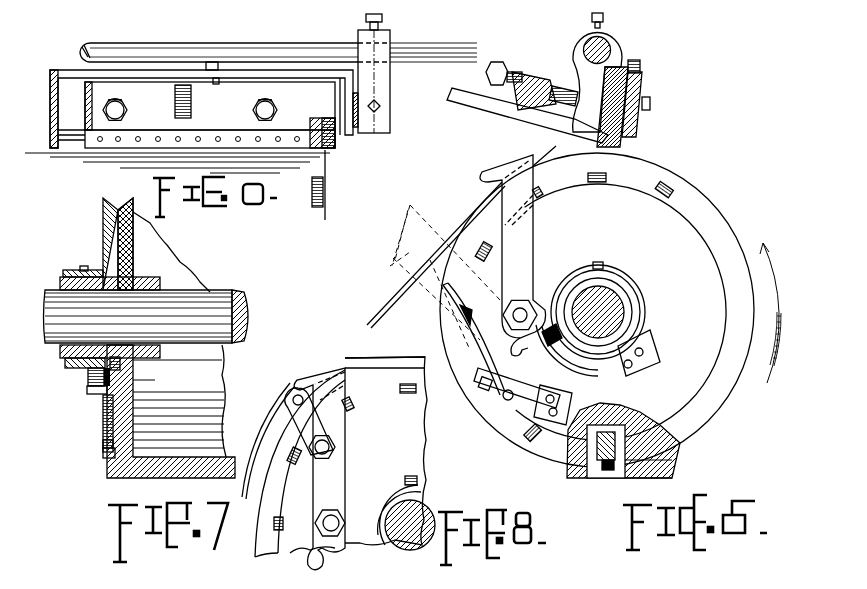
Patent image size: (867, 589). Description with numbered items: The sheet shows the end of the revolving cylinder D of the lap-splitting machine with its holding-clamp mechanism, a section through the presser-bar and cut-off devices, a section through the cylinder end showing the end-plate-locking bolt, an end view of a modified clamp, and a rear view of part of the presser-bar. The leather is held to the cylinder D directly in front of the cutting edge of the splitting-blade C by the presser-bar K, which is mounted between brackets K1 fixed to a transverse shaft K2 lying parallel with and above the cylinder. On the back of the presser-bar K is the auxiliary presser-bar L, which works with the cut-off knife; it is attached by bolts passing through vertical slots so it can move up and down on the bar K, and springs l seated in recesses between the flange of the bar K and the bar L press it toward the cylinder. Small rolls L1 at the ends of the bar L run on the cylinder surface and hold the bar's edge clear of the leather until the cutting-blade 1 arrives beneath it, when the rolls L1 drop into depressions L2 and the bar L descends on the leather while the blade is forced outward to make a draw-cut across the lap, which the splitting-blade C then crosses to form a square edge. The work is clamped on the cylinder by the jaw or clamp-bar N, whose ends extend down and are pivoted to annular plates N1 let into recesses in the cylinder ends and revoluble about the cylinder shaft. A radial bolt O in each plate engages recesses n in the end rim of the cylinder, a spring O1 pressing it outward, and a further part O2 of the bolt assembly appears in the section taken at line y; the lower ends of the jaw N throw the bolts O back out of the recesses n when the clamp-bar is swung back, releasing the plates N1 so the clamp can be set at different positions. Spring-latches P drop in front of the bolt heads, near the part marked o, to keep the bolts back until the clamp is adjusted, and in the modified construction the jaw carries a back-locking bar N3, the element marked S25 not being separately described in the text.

In FIG. 9, the presser-bar K is at (50, 110).
In FIG. 5, the presser-bar K is at (630, 62).
In FIG. 9, the brackets K1 is at (375, 88).
In FIG. 9, the transverse shaft K2 is at (278, 49).
In FIG. 9, the auxiliary presser-bar L is at (210, 115).
In FIG. 5, the auxiliary presser-bar L is at (638, 128).
In FIG. 9, the small rolls L1 is at (325, 150).
In FIG. 9, the depressions L2 is at (326, 198).
In FIG. 5, the depressions L2 is at (650, 475).
In FIG. 9, the springs l is at (188, 101).
In FIG. 9, the cylinder D is at (177, 168).
In FIG. 7, the cylinder D is at (146, 338).
In FIG. 8, the cylinder D is at (300, 463).
In FIG. 5, the cylinder D is at (597, 310).
In FIG. 7, the radial bolt O is at (95, 392).
In FIG. 5, the radial bolt O is at (486, 392).
In FIG. 5, the spring O1 is at (570, 362).
In FIG. 7, the nut O2 is at (90, 376).
In FIG. 8, the jaw or clamp-bar N is at (319, 458).
In FIG. 5, the jaw or clamp-bar N is at (513, 248).
In FIG. 7, the annular plates N1 is at (104, 415).
In FIG. 8, the annular plates N1 is at (362, 455).
In FIG. 5, the annular plates N1 is at (621, 317).
In FIG. 8, the back-locking bar N3 is at (295, 394).
In FIG. 7, the recesses n is at (104, 466).
In FIG. 8, the recesses n is at (345, 452).
In FIG. 5, the recesses n is at (582, 305).
In FIG. 8, the section line y is at (458, 400).
In FIG. 5, the section line y is at (737, 231).
In FIG. 8, the pin o is at (480, 385).
In FIG. 8, the strap spring S25 is at (265, 427).
In FIG. 5, the strap spring S25 is at (392, 292).
In FIG. 5, the splitting-blade C is at (527, 102).
In FIG. 5, the spring-latches P is at (481, 315).
In FIG. 5, the cutting-blade 1 is at (623, 450).